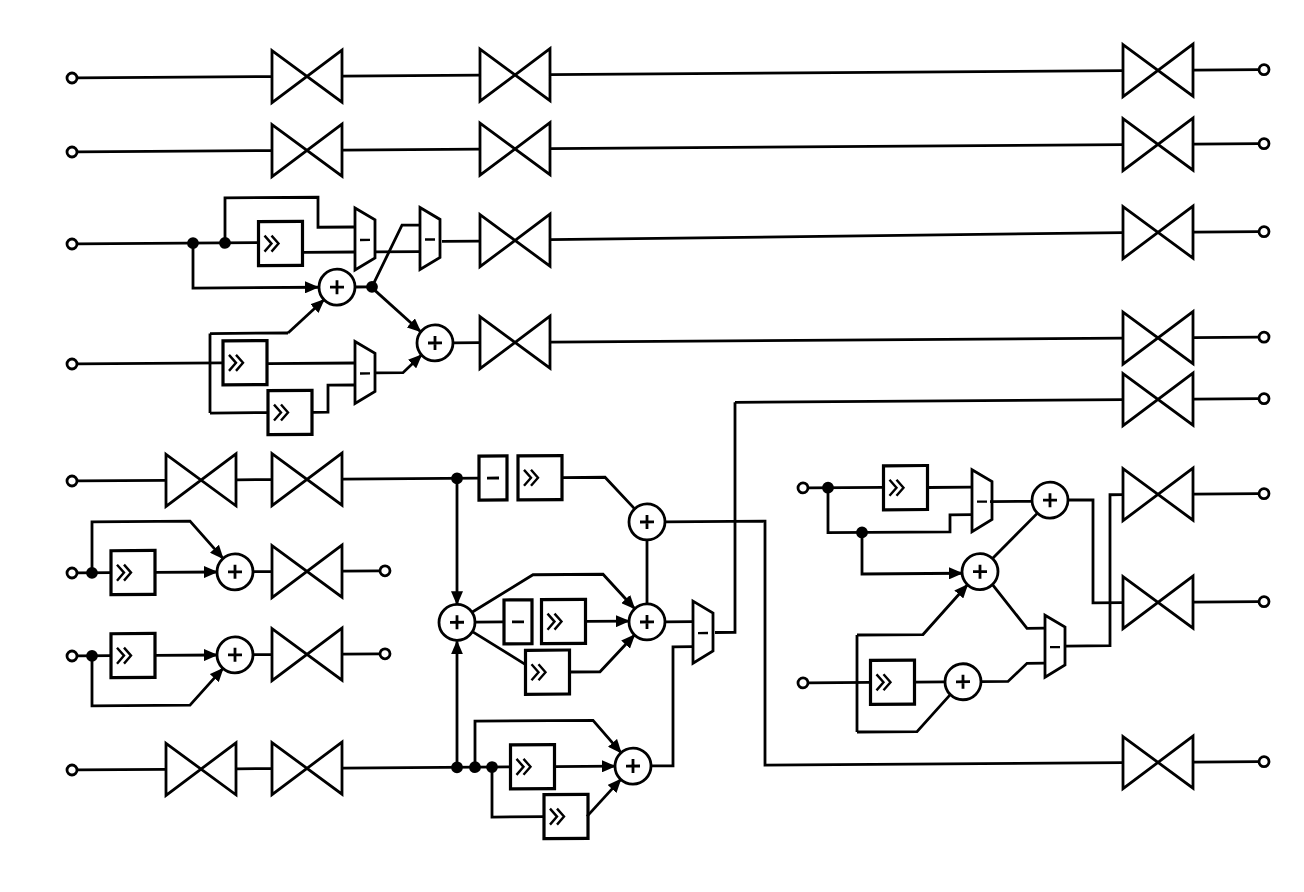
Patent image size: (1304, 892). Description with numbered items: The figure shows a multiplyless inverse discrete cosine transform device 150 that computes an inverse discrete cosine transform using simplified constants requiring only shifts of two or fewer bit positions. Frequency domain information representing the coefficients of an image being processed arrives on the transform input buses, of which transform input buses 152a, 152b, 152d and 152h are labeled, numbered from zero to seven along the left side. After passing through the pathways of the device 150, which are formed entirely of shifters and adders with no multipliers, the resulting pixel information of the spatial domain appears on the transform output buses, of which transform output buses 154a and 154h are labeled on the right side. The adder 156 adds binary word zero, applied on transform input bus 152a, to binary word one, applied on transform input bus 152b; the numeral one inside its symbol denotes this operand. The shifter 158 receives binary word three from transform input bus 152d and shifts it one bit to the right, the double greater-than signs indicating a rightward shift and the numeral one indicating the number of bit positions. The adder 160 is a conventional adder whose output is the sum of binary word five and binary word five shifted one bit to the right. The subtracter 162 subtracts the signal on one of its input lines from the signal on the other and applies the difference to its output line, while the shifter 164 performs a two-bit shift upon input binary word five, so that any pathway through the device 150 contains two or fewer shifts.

The multiplyless inverse discrete cosine transform device 150 is at (668, 446).
The transform input bus 152a is at (169, 56).
The transform input bus 152b is at (169, 130).
The transform input bus 152d is at (145, 342).
The transform input bus 152h is at (116, 748).
The transform output bus 154a is at (1235, 49).
The transform output bus 154h is at (1248, 739).
The adder 156 is at (335, 60).
The shifter 158 is at (217, 347).
The adder 160 is at (213, 594).
The subtracter 162 is at (722, 657).
The shifter 164 is at (926, 464).